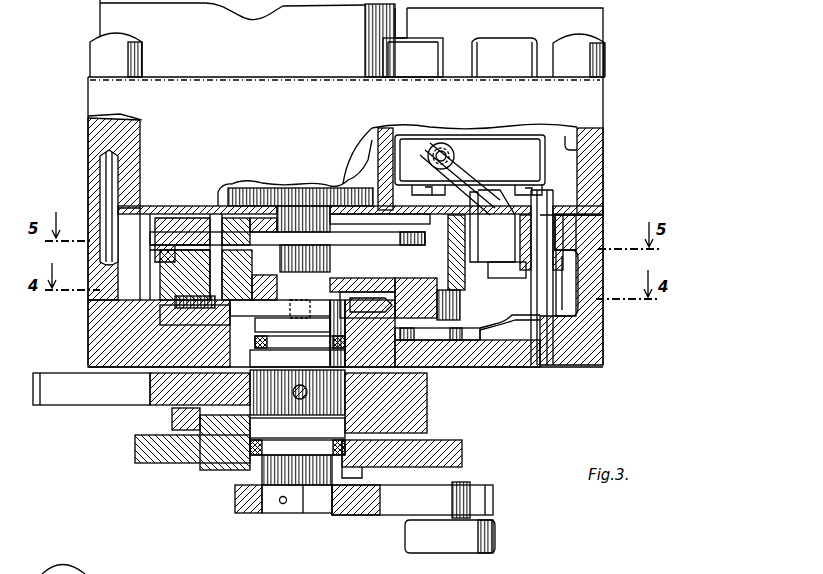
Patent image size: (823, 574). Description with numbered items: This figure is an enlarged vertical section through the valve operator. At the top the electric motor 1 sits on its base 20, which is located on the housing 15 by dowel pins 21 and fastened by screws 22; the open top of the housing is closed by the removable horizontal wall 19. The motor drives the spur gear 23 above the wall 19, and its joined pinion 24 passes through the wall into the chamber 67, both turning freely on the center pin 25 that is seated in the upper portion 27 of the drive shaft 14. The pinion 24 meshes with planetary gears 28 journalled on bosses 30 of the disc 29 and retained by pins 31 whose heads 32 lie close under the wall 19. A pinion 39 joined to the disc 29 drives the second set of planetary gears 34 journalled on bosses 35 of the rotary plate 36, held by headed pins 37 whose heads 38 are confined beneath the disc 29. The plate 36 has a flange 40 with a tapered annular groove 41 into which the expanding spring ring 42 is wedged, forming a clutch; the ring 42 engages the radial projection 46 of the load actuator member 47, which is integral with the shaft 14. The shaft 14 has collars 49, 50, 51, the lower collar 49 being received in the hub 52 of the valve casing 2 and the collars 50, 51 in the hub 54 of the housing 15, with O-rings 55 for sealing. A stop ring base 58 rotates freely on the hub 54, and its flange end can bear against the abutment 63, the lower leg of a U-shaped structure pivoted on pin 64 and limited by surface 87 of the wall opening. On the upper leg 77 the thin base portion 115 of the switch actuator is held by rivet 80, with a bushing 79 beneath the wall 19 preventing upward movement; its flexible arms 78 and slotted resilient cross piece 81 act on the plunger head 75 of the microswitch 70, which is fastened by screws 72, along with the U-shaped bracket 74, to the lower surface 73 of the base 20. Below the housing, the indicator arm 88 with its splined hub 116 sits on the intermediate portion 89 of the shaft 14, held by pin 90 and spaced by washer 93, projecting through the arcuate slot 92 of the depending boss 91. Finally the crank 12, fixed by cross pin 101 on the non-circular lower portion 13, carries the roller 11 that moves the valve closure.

The motor 1 is at (110, 17).
The screws 22 is at (95, 58).
The base 20 is at (100, 93).
The dowel pins 21 is at (105, 182).
The housing 15 is at (606, 346).
The lower surface 73 is at (588, 148).
The U-shaped bracket 74 is at (408, 176).
The microswitch 70 is at (490, 140).
The plunger head 75 is at (447, 152).
The flexible arms 78 is at (470, 160).
The resilient cross piece 81 is at (486, 190).
The screws 72 is at (545, 196).
The horizontal wall 19 is at (595, 216).
The spur gear 23 is at (269, 190).
The center pin 25 is at (298, 186).
The pinion 24 is at (323, 206).
The heads 32 is at (244, 205).
The chamber 67 is at (355, 212).
The disc 29 is at (398, 236).
The pinion 39 is at (326, 259).
The bosses 30 is at (205, 222).
The pins 31 is at (214, 216).
The planetary gears 28 is at (196, 216).
The bosses 35 is at (165, 207).
The planetary gears 34 is at (152, 268).
The heads 38 is at (110, 236).
The headed pins 37 is at (150, 241).
The annular groove 41 is at (170, 311).
The spring ring 42 is at (165, 320).
The upper portion 27 is at (328, 281).
The rotary plate 36 is at (370, 290).
The radial projection 46 is at (402, 292).
The flange 40 is at (458, 299).
The bushing 79 is at (526, 233).
The rivet 80 is at (497, 270).
The upper leg 77 is at (524, 268).
The base portion 115 is at (566, 248).
The pin 64 is at (580, 308).
The spacer washer 93 is at (345, 371).
The surface 87 is at (453, 335).
The abutment 63 is at (495, 332).
The load actuator member 47 is at (280, 307).
The hub 54 is at (335, 320).
The collar 51 is at (292, 324).
The O-ring 55 is at (268, 342).
The collar 50 is at (297, 358).
The pin 90 is at (302, 385).
The indicator arm 88 is at (55, 375).
The base 58 is at (160, 376).
The arcuate slot 92 is at (178, 407).
The collar 49 is at (297, 404).
The hub 116 is at (348, 391).
The intermediate portion 89 is at (340, 407).
The depending boss 91 is at (415, 424).
The casing 2 is at (152, 464).
The hub 52 is at (240, 471).
The drive shaft 14 is at (268, 472).
The cross pin 101 is at (283, 505).
The lower portion 13 is at (303, 515).
The crank 12 is at (392, 503).
The roller 11 is at (482, 536).